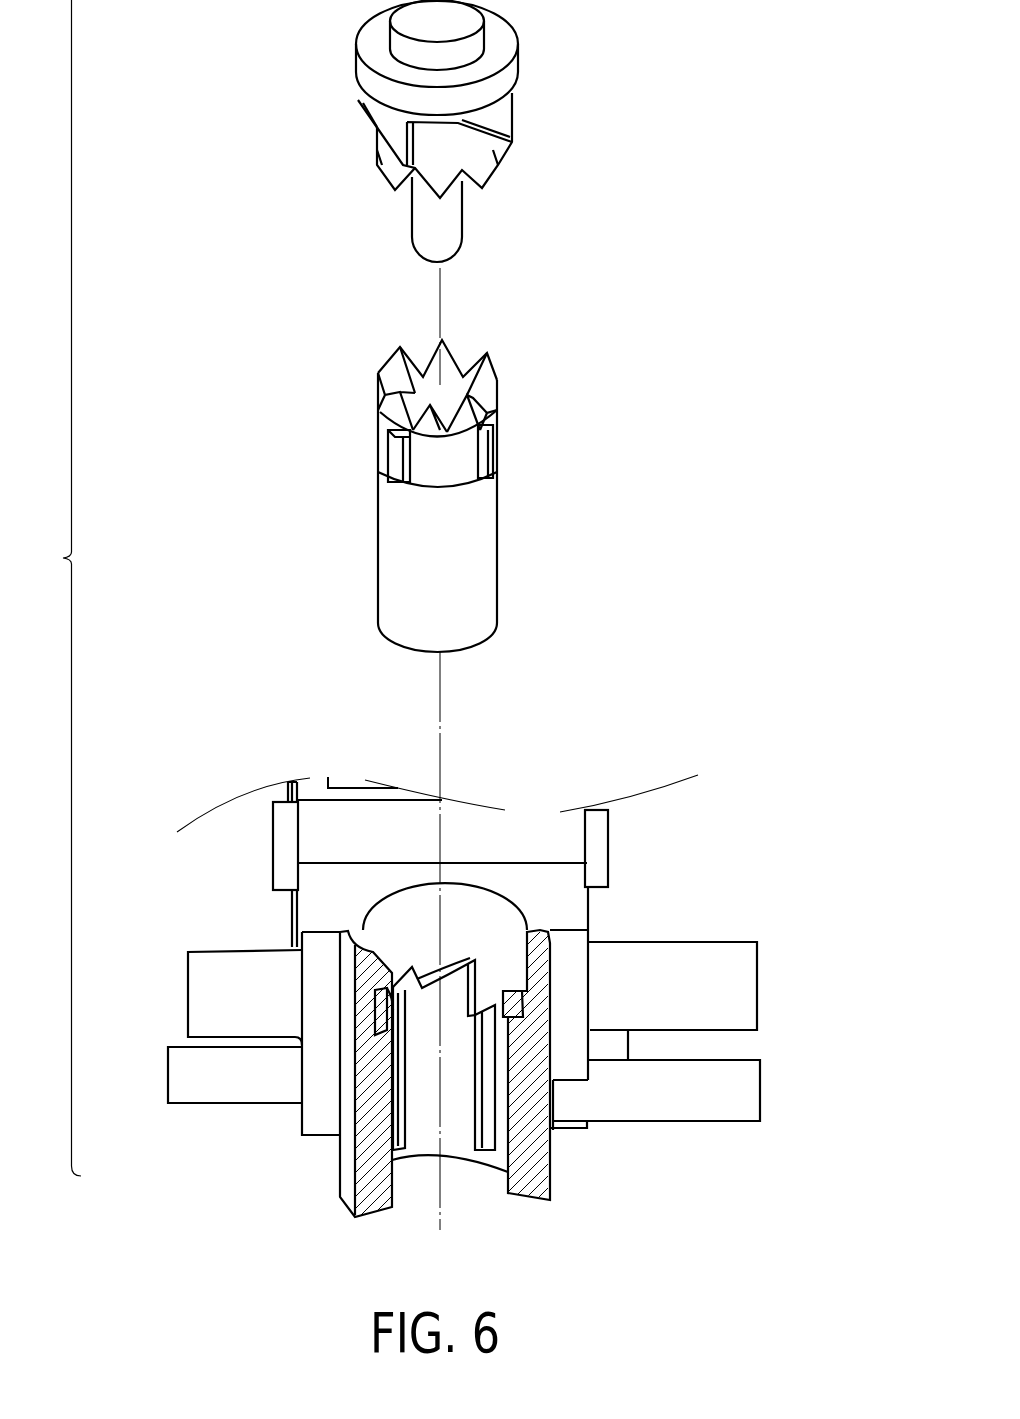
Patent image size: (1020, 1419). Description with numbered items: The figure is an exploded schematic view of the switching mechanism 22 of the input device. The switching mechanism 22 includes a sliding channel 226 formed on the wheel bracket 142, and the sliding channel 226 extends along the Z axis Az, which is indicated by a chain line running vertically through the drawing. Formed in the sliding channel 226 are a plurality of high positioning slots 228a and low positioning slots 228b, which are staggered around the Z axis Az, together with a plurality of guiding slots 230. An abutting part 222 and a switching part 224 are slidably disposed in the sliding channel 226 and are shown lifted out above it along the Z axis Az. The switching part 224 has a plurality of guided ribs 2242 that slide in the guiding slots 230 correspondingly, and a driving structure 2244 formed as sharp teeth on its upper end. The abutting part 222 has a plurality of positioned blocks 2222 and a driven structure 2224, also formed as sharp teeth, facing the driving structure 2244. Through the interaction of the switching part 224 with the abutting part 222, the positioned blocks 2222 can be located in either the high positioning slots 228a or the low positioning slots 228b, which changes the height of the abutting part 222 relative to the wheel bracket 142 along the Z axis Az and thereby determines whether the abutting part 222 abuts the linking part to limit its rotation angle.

The switching mechanism 22 is at (55, 588).
The abutting part 222 is at (368, 48).
The positioned blocks 2222 is at (388, 137).
The driven structure 2224 is at (393, 175).
The switching part 224 is at (398, 575).
The guided ribs 2242 is at (395, 452).
The driving structure 2244 is at (483, 372).
The sliding channel 226 is at (492, 917).
The high positioning slots 228a is at (427, 972).
The low positioning slots 228b is at (390, 1002).
The guiding slots 230 is at (395, 1075).
The wheel bracket 142 is at (315, 1120).
The Z axis Az is at (444, 1190).